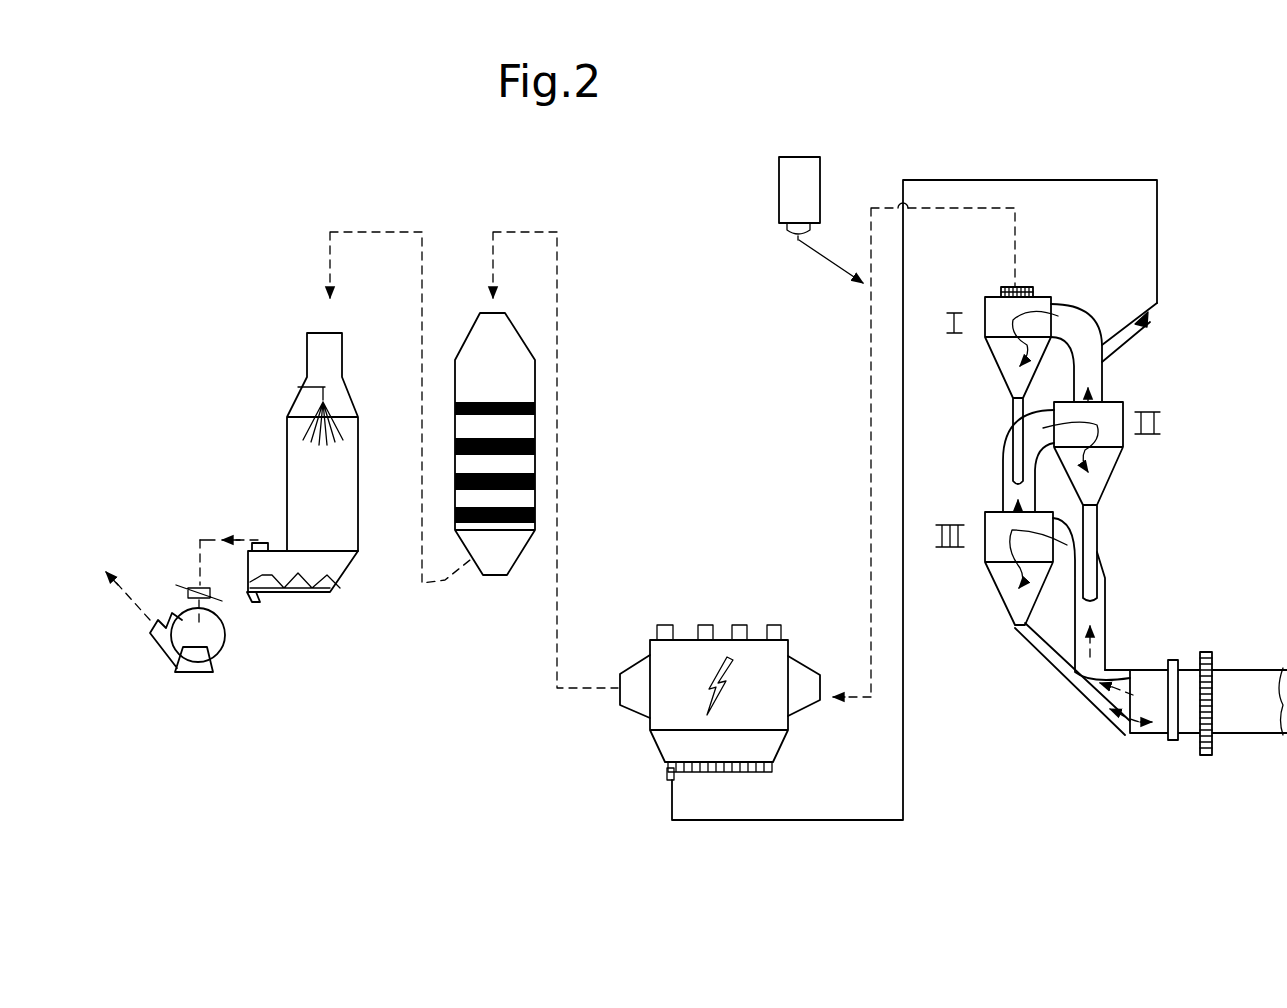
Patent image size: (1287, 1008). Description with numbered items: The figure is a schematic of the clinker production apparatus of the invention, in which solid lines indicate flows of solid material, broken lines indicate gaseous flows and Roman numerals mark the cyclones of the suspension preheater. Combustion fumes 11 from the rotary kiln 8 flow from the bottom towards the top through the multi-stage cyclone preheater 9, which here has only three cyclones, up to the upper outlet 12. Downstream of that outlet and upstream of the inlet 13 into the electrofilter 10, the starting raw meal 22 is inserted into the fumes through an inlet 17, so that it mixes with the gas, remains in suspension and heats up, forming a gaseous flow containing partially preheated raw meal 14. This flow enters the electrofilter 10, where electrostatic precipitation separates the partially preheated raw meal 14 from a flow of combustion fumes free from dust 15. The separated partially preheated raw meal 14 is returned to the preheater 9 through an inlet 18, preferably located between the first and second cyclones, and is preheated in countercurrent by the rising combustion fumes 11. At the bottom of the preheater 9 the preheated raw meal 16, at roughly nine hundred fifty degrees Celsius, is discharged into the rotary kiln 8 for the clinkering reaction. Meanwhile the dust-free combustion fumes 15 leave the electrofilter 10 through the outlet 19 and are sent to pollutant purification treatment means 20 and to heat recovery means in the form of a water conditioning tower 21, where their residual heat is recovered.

The rotary kiln 8 is at (1264, 648).
The multi-stage cyclone preheater 9 is at (1130, 482).
The electrofilter 10 is at (752, 600).
The combustion fumes 11 is at (870, 405).
The upper outlet 12 is at (1035, 290).
The inlet into the electrofilter 13 is at (822, 692).
The partially preheated raw meal 14 is at (670, 800).
The combustion fumes free from dust 15 is at (558, 290).
The preheated raw meal 16 is at (1137, 733).
The inlet for the starting raw meal 17 is at (845, 262).
The inlet to the preheater 18 is at (1125, 306).
The outlet of the electrofilter 19 is at (620, 697).
The pollutant purification treatment means 20 is at (544, 428).
The conditioning tower 21 is at (291, 354).
The raw meal 22 is at (793, 197).